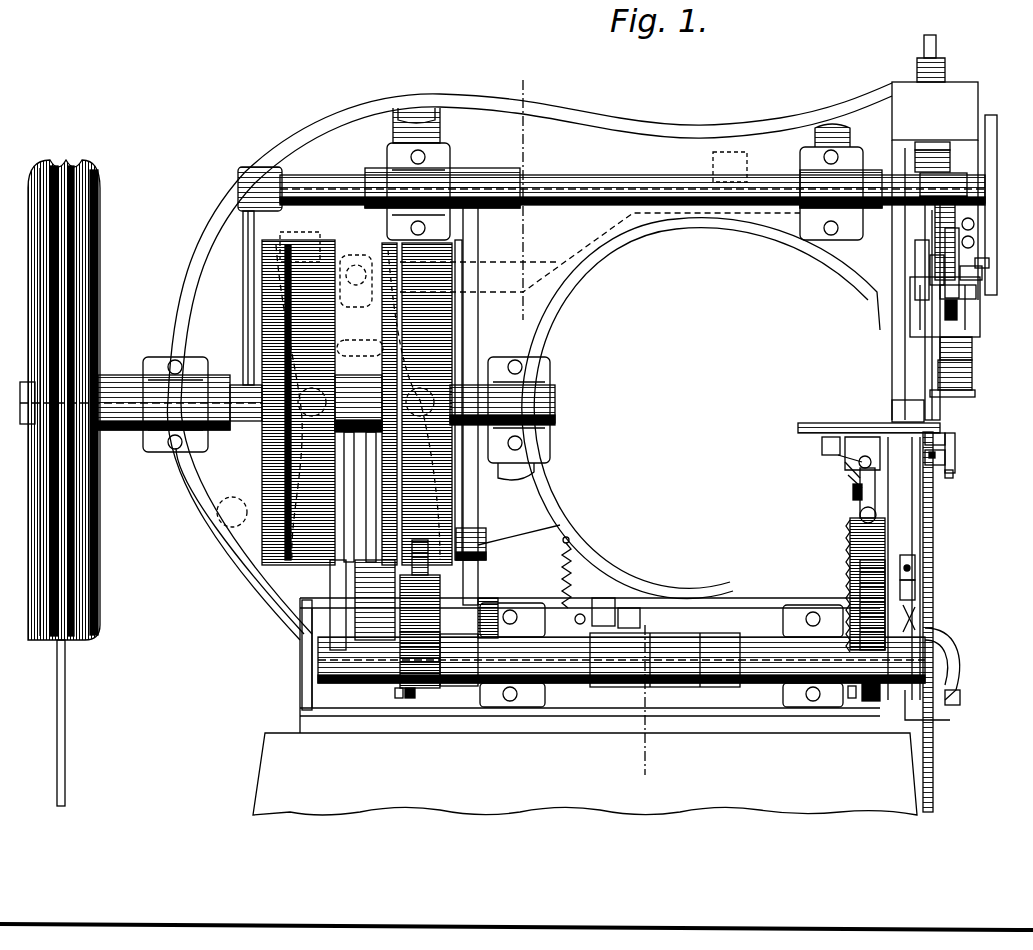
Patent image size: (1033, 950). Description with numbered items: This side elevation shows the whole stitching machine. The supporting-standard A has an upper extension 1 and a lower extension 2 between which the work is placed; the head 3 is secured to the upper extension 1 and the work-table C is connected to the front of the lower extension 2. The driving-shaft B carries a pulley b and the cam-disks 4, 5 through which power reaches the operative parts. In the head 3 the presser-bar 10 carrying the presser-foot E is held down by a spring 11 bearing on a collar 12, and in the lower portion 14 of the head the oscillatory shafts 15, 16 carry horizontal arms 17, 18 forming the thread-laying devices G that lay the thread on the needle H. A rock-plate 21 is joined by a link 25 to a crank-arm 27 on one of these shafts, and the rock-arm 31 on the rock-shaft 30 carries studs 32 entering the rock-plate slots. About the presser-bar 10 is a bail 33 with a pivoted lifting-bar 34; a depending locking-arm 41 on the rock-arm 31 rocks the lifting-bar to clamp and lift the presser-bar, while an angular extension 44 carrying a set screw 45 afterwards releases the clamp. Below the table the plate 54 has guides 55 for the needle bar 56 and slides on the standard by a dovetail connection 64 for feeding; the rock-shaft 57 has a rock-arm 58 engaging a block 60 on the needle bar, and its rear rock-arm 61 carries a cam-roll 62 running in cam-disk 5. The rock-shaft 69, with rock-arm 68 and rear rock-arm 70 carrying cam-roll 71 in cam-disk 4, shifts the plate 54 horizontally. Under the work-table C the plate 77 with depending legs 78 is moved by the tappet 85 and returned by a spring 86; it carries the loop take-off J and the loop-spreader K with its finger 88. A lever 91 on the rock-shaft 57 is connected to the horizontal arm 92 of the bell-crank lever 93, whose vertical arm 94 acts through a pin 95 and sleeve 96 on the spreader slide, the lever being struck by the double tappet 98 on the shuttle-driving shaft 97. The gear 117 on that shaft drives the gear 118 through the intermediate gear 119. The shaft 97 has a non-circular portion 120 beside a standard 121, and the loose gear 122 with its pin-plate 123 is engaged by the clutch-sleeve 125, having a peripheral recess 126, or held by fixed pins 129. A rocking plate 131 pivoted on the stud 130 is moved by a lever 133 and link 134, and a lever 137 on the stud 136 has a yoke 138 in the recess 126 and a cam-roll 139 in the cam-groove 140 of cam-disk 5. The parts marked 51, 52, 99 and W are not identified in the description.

The upper extension 1 is at (790, 228).
The lower extension 2 is at (742, 598).
The head 3 is at (489, 430).
The cam-disk 4 is at (298, 398).
The cam-disk 5 is at (417, 404).
The presser-bar 10 is at (945, 45).
The spring 11 is at (950, 156).
The collar 12 is at (950, 166).
The lower portion of the head 14 is at (980, 322).
The oscillatory shaft 15 is at (972, 368).
The oscillatory shaft 16 is at (972, 383).
The horizontal arm 17 is at (975, 396).
The horizontal arm 18 is at (933, 385).
The rock-plate 21 is at (997, 194).
The link 25 is at (989, 263).
The crank-arm 27 is at (982, 276).
The rock-shaft 30 is at (592, 185).
The rock-arm 31 is at (935, 226).
The studs 32 is at (975, 224).
The yoke or bail 33 is at (916, 262).
The lifting-bar 34 is at (946, 280).
The locking-arm 41 is at (976, 294).
The angular extension 44 is at (932, 285).
The set screw 45 is at (958, 312).
The rod 51 is at (243, 268).
The bearing 52 is at (235, 443).
The plate 54 is at (916, 566).
The guides 55 is at (917, 590).
The needle bar 56 is at (934, 542).
The rock-shaft 57 is at (700, 690).
The rock-arm 58 is at (914, 627).
The block 60 is at (960, 700).
The rock-arm 61 is at (300, 602).
The cam-roll 62 is at (232, 512).
The dovetail connection 64 is at (950, 716).
The rock-arm 68 is at (870, 702).
The rock-shaft 69 is at (400, 698).
The rock-arm 70 is at (302, 640).
The cam-roll 71 is at (359, 451).
The plate 77 is at (838, 452).
The depending legs 78 is at (943, 460).
The tappet 85 is at (864, 495).
The spring 86 is at (858, 463).
The horizontal finger 88 is at (943, 440).
The lever 91 is at (592, 690).
The horizontal arm 92 is at (635, 620).
The bell-crank lever 93 is at (916, 616).
The vertical arm 94 is at (862, 488).
The elongated pin 95 is at (860, 480).
The sleeve 96 is at (872, 463).
The shuttle-driving shaft 97 is at (592, 618).
The double tappet 98 is at (623, 618).
The spring 99 is at (578, 616).
The gear 117 is at (858, 625).
The gear 118 is at (858, 512).
The intermediate gear 119 is at (852, 566).
The non-circular portion 120 is at (385, 600).
The standard 121 is at (508, 708).
The driving-gear 122 is at (486, 600).
The plate 123 is at (459, 669).
The clutch-sleeve 125 is at (430, 690).
The peripheral recess 126 is at (410, 698).
The pins 129 is at (380, 572).
The stud 130 is at (470, 475).
The rocking plate 131 is at (478, 580).
The lever 133 is at (478, 245).
The link 134 is at (545, 528).
The stud 136 is at (378, 166).
The lever 137 is at (352, 256).
The yoke 138 is at (350, 645).
The cam-roll 139 is at (468, 356).
The cam-groove 140 is at (413, 313).
The pulley b is at (97, 216).
The supporting-standard A is at (442, 184).
The driving-shaft B is at (553, 402).
The work-table C is at (832, 452).
The presser-foot E is at (925, 410).
The thread-laying devices G is at (962, 446).
The needle H is at (921, 508).
The loop-carrier J is at (954, 474).
The loop-spreader K is at (956, 456).
The work plate W is at (838, 423).